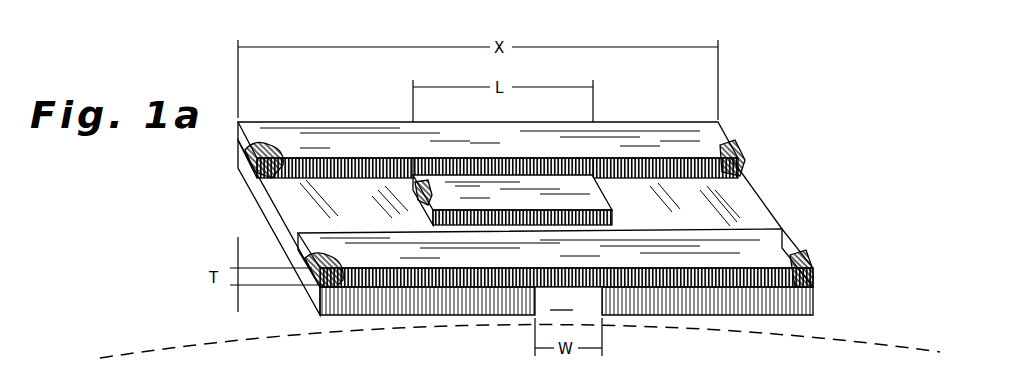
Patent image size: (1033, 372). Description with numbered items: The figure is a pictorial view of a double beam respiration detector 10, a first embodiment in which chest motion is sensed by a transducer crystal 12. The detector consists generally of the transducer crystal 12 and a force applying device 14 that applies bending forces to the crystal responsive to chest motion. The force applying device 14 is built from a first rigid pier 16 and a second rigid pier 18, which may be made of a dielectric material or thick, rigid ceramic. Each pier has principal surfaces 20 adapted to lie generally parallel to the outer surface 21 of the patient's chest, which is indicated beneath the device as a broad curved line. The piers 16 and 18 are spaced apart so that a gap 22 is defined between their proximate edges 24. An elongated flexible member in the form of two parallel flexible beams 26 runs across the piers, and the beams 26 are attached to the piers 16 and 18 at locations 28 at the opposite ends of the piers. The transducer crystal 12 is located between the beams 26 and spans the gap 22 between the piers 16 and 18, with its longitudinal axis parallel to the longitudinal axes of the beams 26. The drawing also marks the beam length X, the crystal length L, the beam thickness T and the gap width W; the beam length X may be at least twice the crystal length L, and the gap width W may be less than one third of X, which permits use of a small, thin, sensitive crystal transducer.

The respiration detector 10 is at (778, 138).
The transducer crystal 12 is at (523, 190).
The force applying device 14 is at (768, 199).
The first rigid pier 16 is at (368, 292).
The second rigid pier 18 is at (745, 291).
The principal surfaces 20 is at (255, 186).
The outer surface of the chest 21 is at (863, 342).
The gap 22 is at (535, 302).
The proximate edges 24 is at (600, 305).
The flexible beams 26 is at (703, 140).
The attachment locations 28 is at (252, 158).